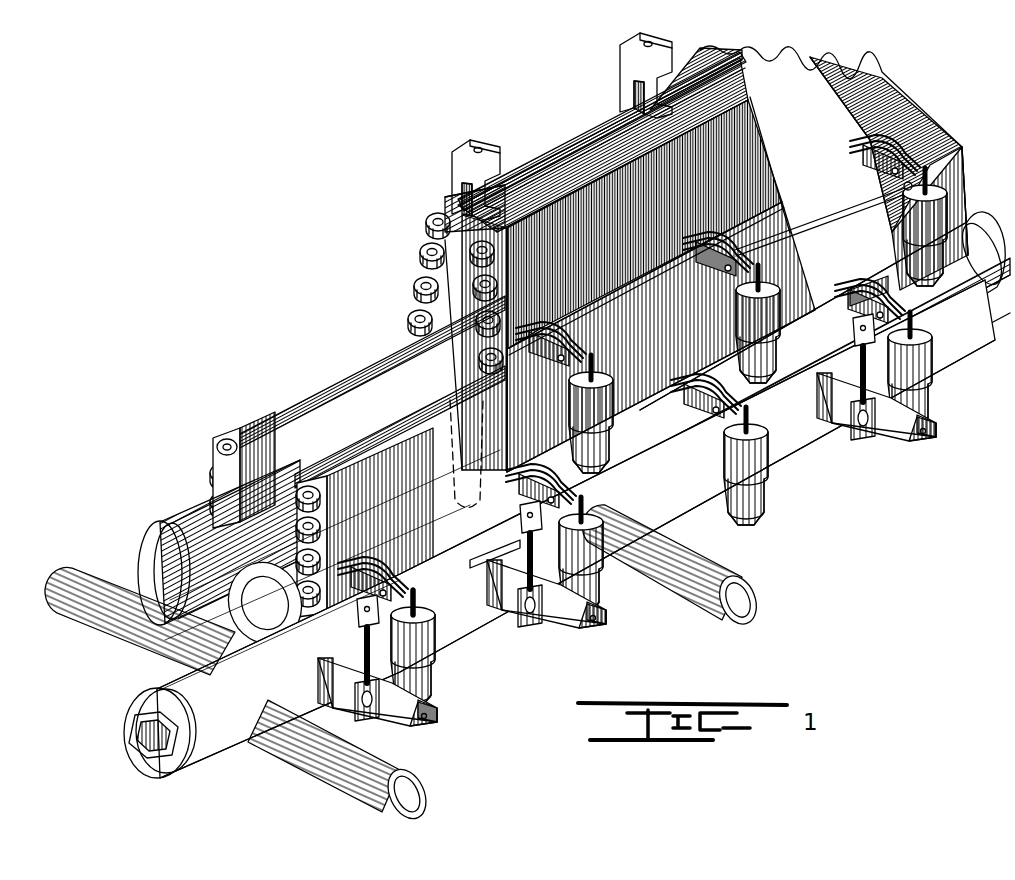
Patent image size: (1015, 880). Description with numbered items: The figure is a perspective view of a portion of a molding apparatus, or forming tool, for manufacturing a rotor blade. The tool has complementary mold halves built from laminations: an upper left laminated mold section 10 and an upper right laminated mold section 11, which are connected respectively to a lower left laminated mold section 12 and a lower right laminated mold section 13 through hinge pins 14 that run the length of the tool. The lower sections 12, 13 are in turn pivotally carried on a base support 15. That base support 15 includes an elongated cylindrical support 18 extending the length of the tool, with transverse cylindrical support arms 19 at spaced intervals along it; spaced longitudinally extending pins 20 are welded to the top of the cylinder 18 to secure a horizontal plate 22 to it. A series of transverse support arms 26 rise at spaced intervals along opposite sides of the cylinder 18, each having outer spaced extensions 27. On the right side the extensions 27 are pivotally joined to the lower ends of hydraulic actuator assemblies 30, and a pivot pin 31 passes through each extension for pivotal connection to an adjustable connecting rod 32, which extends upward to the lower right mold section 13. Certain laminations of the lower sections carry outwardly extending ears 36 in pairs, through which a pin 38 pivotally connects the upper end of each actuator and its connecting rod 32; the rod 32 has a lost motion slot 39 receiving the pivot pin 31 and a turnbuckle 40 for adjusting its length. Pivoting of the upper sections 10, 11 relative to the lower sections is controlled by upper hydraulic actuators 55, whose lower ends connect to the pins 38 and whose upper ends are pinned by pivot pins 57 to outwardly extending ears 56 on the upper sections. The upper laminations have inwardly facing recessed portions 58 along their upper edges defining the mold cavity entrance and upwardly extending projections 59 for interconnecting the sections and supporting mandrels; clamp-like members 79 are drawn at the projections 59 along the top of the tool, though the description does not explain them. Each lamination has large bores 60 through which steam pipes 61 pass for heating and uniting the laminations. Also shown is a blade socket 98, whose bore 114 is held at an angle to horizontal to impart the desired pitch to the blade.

The upper left laminated mold section 10 is at (553, 137).
The upper right laminated mold section 11 is at (867, 93).
The lower left laminated mold section 12 is at (367, 357).
The lower right laminated mold section 13 is at (960, 182).
The hinge pins 14 is at (217, 440).
The base support 15 is at (253, 745).
The elongated cylindrical support 18 is at (143, 687).
The transverse cylindrical support arms 19 is at (67, 583).
The longitudinally extending pins 20 is at (947, 277).
The horizontal plate 22 is at (433, 557).
The transverse support arms 26 is at (383, 720).
The outer spaced extensions 27 is at (423, 720).
The hydraulic actuator assemblies 30 is at (773, 483).
The pivot pin 31 is at (510, 613).
The adjustable connecting rod 32 is at (900, 377).
The outwardly extending ears 36 is at (887, 270).
The pin 38 is at (887, 310).
The lost motion slot 39 is at (527, 603).
The turnbuckle 40 is at (410, 657).
The upper hydraulic actuators 55 is at (913, 220).
The outwardly extending ears 56 is at (890, 163).
The pivot pins 57 is at (904, 185).
The inwardly facing recessed portions 58 is at (463, 195).
The upwardly extending projections 59 is at (460, 190).
The large bores 60 is at (420, 243).
The steam pipes 61 is at (427, 220).
The clamp body 79 is at (457, 163).
The blade socket 98 is at (153, 540).
The bore 114 is at (257, 637).